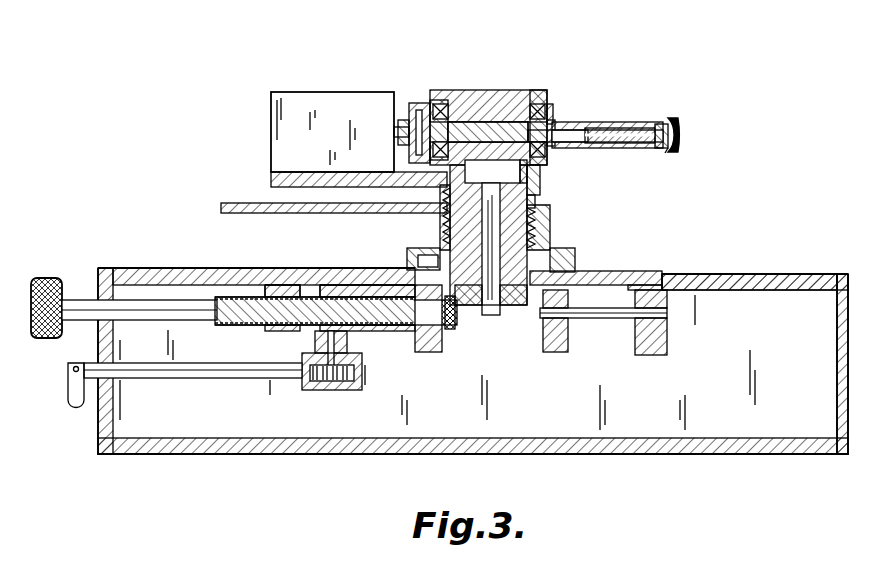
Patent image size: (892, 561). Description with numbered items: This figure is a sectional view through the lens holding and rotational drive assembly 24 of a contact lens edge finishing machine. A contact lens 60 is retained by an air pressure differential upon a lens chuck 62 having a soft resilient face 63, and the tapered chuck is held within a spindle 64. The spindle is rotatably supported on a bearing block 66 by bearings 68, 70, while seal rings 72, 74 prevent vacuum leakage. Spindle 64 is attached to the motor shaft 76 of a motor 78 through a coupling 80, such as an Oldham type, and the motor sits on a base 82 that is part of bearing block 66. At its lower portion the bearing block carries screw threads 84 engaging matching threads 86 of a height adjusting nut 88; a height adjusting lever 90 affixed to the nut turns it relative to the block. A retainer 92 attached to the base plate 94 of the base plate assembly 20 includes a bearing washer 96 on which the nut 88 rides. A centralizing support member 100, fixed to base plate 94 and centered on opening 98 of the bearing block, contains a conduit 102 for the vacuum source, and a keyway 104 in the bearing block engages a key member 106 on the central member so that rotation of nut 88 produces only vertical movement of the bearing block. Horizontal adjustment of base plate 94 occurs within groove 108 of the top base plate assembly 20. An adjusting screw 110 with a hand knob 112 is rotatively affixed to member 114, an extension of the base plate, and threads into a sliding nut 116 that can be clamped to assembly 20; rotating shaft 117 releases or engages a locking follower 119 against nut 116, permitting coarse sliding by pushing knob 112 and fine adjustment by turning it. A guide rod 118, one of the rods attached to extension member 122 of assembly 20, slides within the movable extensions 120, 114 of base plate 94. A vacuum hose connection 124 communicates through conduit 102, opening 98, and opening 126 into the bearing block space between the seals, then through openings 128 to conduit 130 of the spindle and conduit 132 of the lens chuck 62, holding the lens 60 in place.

The base plate assembly 20 is at (833, 268).
The lens holding and rotational drive assembly 24 is at (382, 52).
The contact lens 60 is at (678, 124).
The lens chuck 62 is at (662, 124).
The soft resilient face 63 is at (666, 153).
The spindle 64 is at (580, 122).
The bearing block 66 is at (549, 104).
The bearing 68 is at (553, 120).
The bearing 70 is at (436, 100).
The seal ring 72 is at (526, 104).
The seal ring 74 is at (462, 104).
The motor shaft 76 is at (404, 120).
The motor 78 is at (334, 141).
The coupling 80 is at (416, 103).
The base 82 is at (271, 178).
The screw threads 84 is at (535, 200).
The matching threads 86 is at (565, 248).
The height adjusting nut 88 is at (450, 238).
The height adjusting lever 90 is at (351, 213).
The retainer 92 is at (580, 271).
The base plate 94 is at (645, 285).
The bearing washer 96 is at (407, 258).
The opening 98 is at (540, 178).
The centralizing support member 100 is at (440, 218).
The conduit 102 is at (500, 183).
The keyway 104 is at (550, 228).
The key member 106 is at (518, 305).
The groove 108 is at (680, 274).
The adjusting screw 110 is at (80, 300).
The hand knob 112 is at (50, 338).
The member 114 is at (420, 352).
The sliding nut 116 is at (290, 331).
The shaft 117 is at (220, 378).
The rod 118 is at (586, 318).
The locking follower 119 is at (347, 342).
The movable extension 120 is at (558, 352).
The extension member 122 is at (652, 355).
The vacuum hose connection 124 is at (474, 304).
The opening 126 is at (527, 170).
The openings 128 is at (488, 122).
The conduit 130 is at (585, 142).
The conduit 132 is at (620, 128).